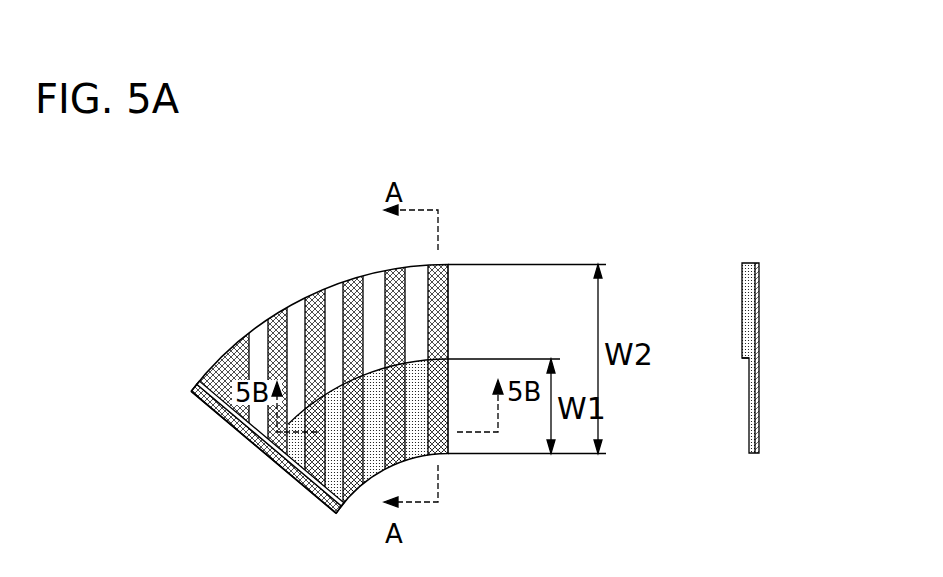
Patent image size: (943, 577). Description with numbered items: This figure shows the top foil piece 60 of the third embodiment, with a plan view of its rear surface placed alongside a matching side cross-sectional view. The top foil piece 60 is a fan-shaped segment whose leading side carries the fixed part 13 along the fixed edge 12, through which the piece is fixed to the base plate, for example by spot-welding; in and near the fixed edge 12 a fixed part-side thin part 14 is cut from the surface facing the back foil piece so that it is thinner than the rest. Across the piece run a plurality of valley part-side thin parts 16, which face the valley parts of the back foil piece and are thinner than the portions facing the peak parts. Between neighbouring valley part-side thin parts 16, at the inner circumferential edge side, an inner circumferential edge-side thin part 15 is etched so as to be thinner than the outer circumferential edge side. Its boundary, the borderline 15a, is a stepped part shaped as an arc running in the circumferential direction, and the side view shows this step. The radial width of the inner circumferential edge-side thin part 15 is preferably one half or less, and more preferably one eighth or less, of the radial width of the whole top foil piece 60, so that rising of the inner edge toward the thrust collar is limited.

The top foil piece 60 is at (347, 256).
The valley part-side thin part 16 is at (231, 356).
The inner circumferential edge-side thin part 15 is at (378, 448).
The borderline 15a is at (742, 357).
The fixed edge 12 is at (263, 444).
The fixed part 13 is at (236, 433).
The fixed part-side thin part 14 is at (301, 466).